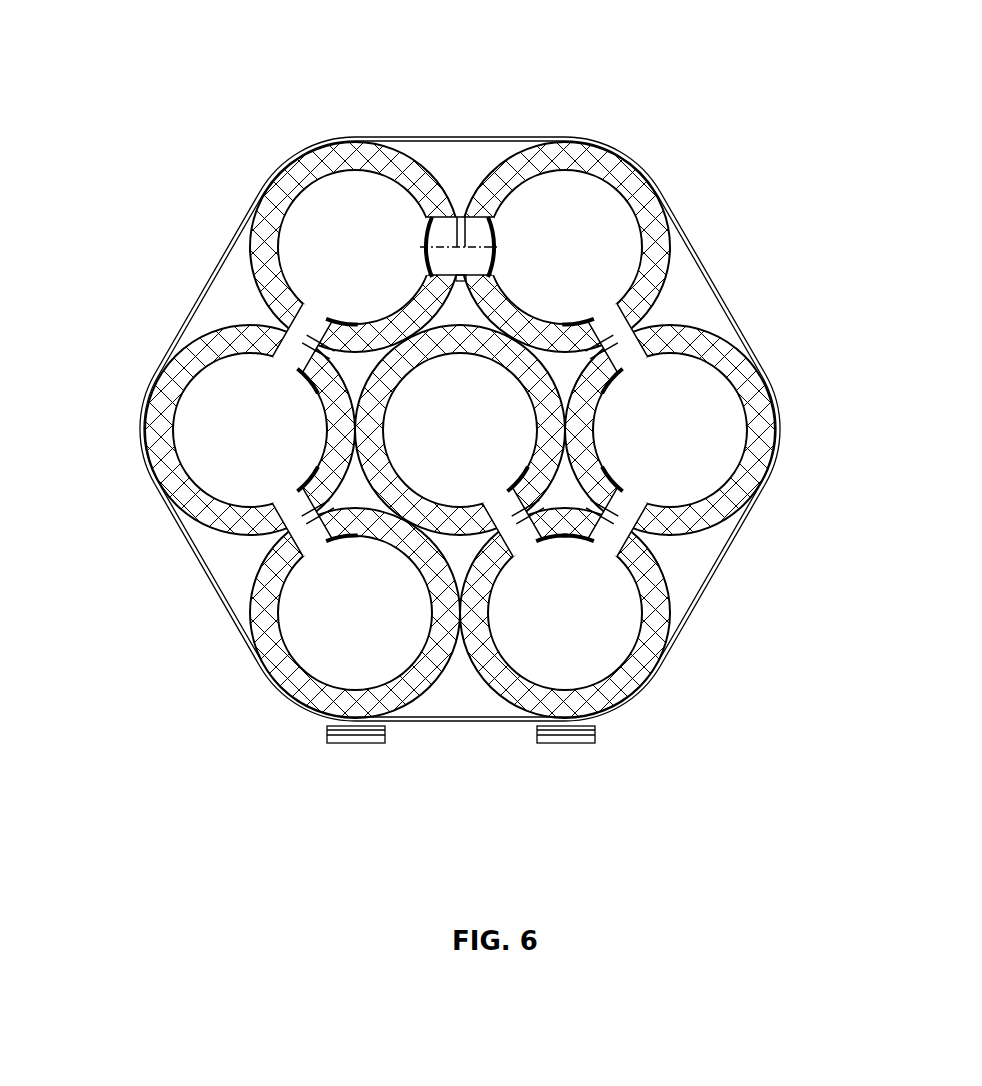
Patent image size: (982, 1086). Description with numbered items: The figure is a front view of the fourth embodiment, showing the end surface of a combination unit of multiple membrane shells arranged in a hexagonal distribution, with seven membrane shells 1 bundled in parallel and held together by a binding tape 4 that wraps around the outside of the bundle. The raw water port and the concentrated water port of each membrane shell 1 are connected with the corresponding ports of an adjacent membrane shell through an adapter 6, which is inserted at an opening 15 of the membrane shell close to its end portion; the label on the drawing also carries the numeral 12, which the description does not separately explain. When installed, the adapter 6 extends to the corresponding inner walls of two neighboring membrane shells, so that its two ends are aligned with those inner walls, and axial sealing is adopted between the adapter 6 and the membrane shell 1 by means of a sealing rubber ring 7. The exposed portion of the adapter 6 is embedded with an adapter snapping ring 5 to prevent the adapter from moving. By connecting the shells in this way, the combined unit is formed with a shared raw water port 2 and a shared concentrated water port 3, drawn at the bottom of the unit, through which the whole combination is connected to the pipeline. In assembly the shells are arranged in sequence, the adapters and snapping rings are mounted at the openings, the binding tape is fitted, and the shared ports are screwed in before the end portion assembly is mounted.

The membrane shell 1 is at (295, 185).
The shared raw water port 2 is at (355, 748).
The shared concentrated water port 3 is at (567, 748).
The binding tape 4 is at (724, 559).
The adapter snapping ring 5 is at (320, 610).
The adapter 6 is at (279, 312).
The sealing rubber ring 7 is at (334, 316).
The opening 15 is at (339, 182).
The rod 12 is at (461, 249).